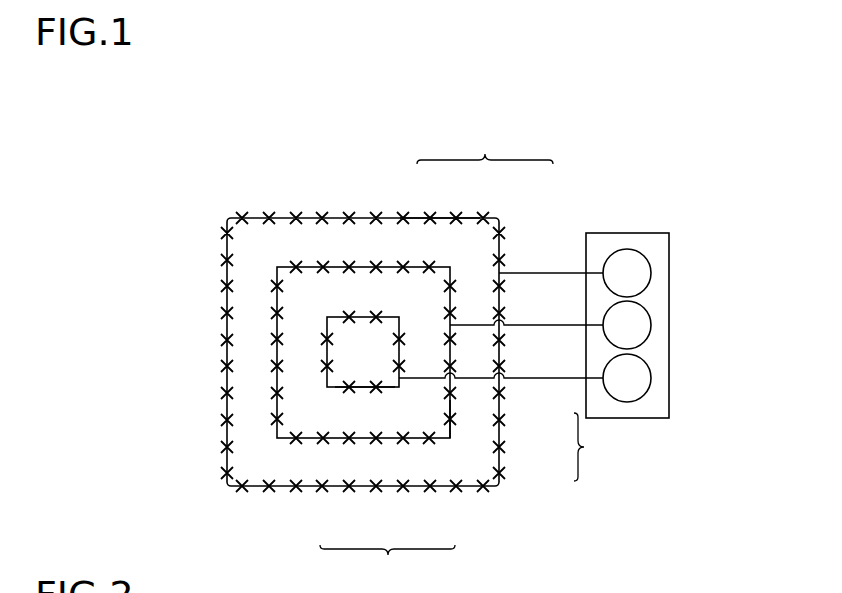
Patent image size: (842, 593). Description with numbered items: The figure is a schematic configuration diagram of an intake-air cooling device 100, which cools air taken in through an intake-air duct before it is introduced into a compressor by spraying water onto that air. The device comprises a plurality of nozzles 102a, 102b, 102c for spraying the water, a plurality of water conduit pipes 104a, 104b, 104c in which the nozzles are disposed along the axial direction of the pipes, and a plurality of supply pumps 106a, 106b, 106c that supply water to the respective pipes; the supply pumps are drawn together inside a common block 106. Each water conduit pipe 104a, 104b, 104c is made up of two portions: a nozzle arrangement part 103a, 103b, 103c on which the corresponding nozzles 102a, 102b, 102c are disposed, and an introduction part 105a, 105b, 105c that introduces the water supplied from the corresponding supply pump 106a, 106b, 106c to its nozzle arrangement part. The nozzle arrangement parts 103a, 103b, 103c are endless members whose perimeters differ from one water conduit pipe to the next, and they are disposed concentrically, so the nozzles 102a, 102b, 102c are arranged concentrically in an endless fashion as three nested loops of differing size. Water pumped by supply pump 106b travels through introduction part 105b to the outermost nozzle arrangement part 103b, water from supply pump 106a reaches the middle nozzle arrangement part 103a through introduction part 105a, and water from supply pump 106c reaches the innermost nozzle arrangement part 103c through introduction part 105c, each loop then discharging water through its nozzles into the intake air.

The intake-air cooling device 100 is at (630, 107).
The nozzle 102a is at (349, 266).
The nozzle 102b is at (296, 218).
The nozzle 102c is at (377, 315).
The nozzle arrangement part 103a is at (450, 413).
The nozzle arrangement part 103b is at (441, 218).
The nozzle arrangement part 103c is at (362, 388).
The water conduit pipe 104a is at (607, 447).
The water conduit pipe 104b is at (485, 146).
The water conduit pipe 104c is at (387, 569).
The introduction part 105a is at (537, 326).
The introduction part 105b is at (527, 273).
The introduction part 105c is at (418, 380).
The feed circuit 106 is at (625, 233).
The supply pump 106a is at (651, 325).
The supply pump 106b is at (651, 273).
The supply pump 106c is at (651, 378).